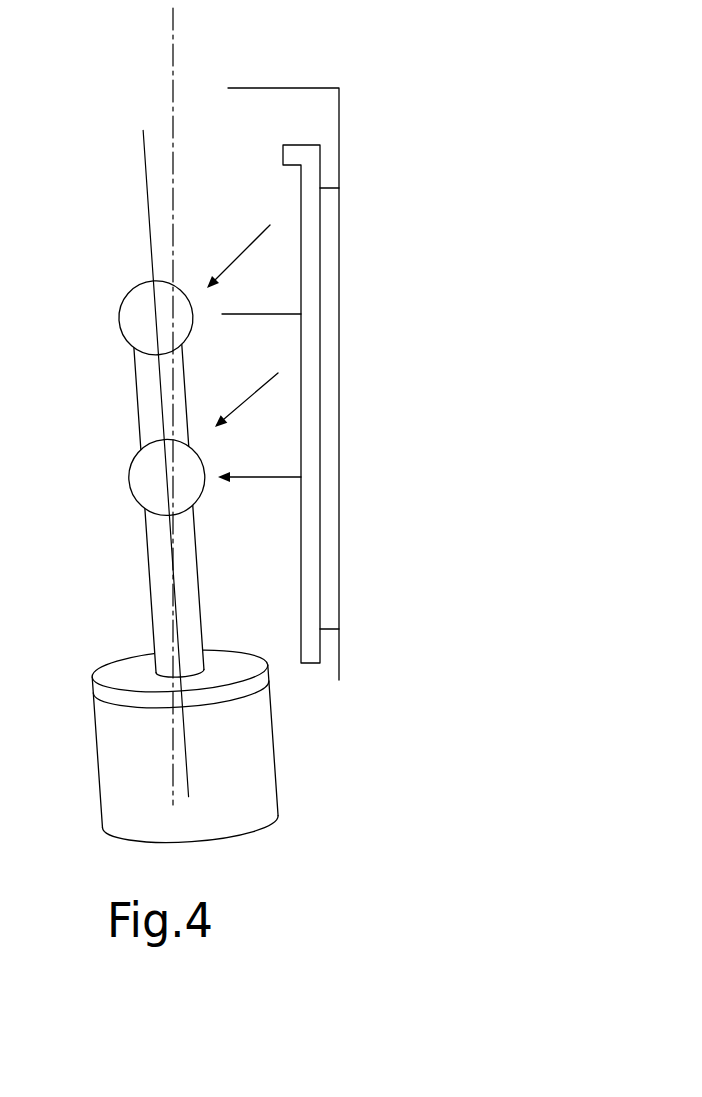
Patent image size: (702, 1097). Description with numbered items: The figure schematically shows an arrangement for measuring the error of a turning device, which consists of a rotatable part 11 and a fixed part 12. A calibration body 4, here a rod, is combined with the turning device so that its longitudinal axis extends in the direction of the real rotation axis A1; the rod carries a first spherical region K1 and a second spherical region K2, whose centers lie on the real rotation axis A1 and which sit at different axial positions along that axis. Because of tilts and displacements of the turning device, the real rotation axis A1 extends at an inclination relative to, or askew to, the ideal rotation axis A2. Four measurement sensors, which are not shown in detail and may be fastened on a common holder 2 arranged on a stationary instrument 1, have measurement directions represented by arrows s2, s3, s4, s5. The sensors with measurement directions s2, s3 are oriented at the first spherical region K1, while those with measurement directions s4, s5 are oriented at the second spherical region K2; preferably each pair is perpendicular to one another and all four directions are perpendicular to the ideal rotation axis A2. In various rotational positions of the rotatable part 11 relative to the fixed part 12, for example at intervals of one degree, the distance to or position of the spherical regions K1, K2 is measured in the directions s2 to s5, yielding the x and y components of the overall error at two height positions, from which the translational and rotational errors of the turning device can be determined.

The stationary instrument 1 is at (339, 408).
The common holder 2 is at (302, 145).
The calibration body 4 is at (150, 613).
The rotatable part 11 is at (92, 692).
The fixed part 12 is at (95, 738).
The first spherical region K1 is at (118, 338).
The second spherical region K2 is at (131, 493).
The real rotation axis A1 is at (142, 172).
The ideal rotation axis A2 is at (171, 37).
The measurement direction s2 is at (245, 251).
The measurement direction s3 is at (260, 314).
The measurement direction s4 is at (242, 402).
The measurement direction s5 is at (258, 478).